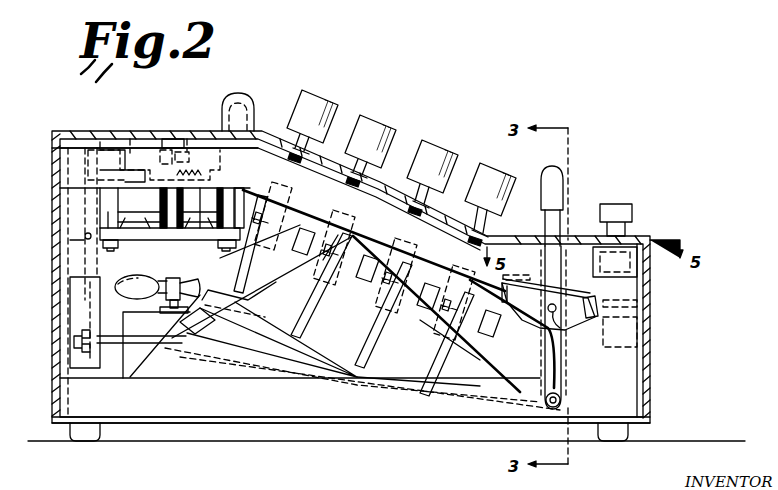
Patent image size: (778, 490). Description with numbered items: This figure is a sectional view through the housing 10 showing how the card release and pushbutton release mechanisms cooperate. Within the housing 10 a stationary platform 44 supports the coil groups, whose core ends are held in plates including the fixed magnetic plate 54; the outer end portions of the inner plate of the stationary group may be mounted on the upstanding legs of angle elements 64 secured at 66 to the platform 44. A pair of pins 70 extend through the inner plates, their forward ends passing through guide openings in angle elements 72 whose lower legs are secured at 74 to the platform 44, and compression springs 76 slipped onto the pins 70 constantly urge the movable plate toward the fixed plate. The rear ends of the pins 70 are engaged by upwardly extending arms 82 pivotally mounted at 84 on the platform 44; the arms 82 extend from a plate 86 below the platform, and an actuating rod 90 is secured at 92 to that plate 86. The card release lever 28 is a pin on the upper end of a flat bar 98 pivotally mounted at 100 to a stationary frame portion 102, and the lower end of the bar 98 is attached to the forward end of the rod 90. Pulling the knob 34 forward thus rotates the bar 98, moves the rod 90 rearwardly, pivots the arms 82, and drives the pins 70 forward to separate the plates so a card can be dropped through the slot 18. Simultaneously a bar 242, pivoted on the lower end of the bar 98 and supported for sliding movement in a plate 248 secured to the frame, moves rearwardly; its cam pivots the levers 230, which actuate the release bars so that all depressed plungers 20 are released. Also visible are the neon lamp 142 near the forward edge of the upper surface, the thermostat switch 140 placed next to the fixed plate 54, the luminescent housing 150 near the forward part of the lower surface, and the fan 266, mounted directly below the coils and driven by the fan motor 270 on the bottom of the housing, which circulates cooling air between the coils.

The housing 10 is at (70, 132).
The slot 18 is at (170, 132).
The plungers 20 is at (306, 158).
The lever 28 is at (565, 221).
The knob 34 is at (560, 196).
The stationary platform 44 is at (178, 248).
The magnetic plate 54 is at (140, 148).
The angle elements 64 is at (162, 200).
The securing point 66 is at (112, 250).
The pins 70 is at (118, 181).
The angle elements 72 is at (210, 228).
The securing point 74 is at (214, 250).
The compression springs 76 is at (192, 148).
The arms 82 is at (62, 178).
The pivot 84 is at (68, 236).
The plate 86 is at (80, 258).
The actuating rod 90 is at (116, 374).
The securing point 92 is at (74, 328).
The flat bar 98 is at (566, 370).
The pivot 100 is at (552, 328).
The stationary frame portion 102 is at (592, 323).
The thermostat switch 140 is at (106, 143).
The neon lamp 142 is at (246, 100).
The luminescent housing 150 is at (632, 210).
The levers 230 is at (336, 194).
The bar 242 is at (474, 347).
The plate 248 is at (238, 372).
The fan 266 is at (142, 272).
The fan motor 270 is at (156, 345).